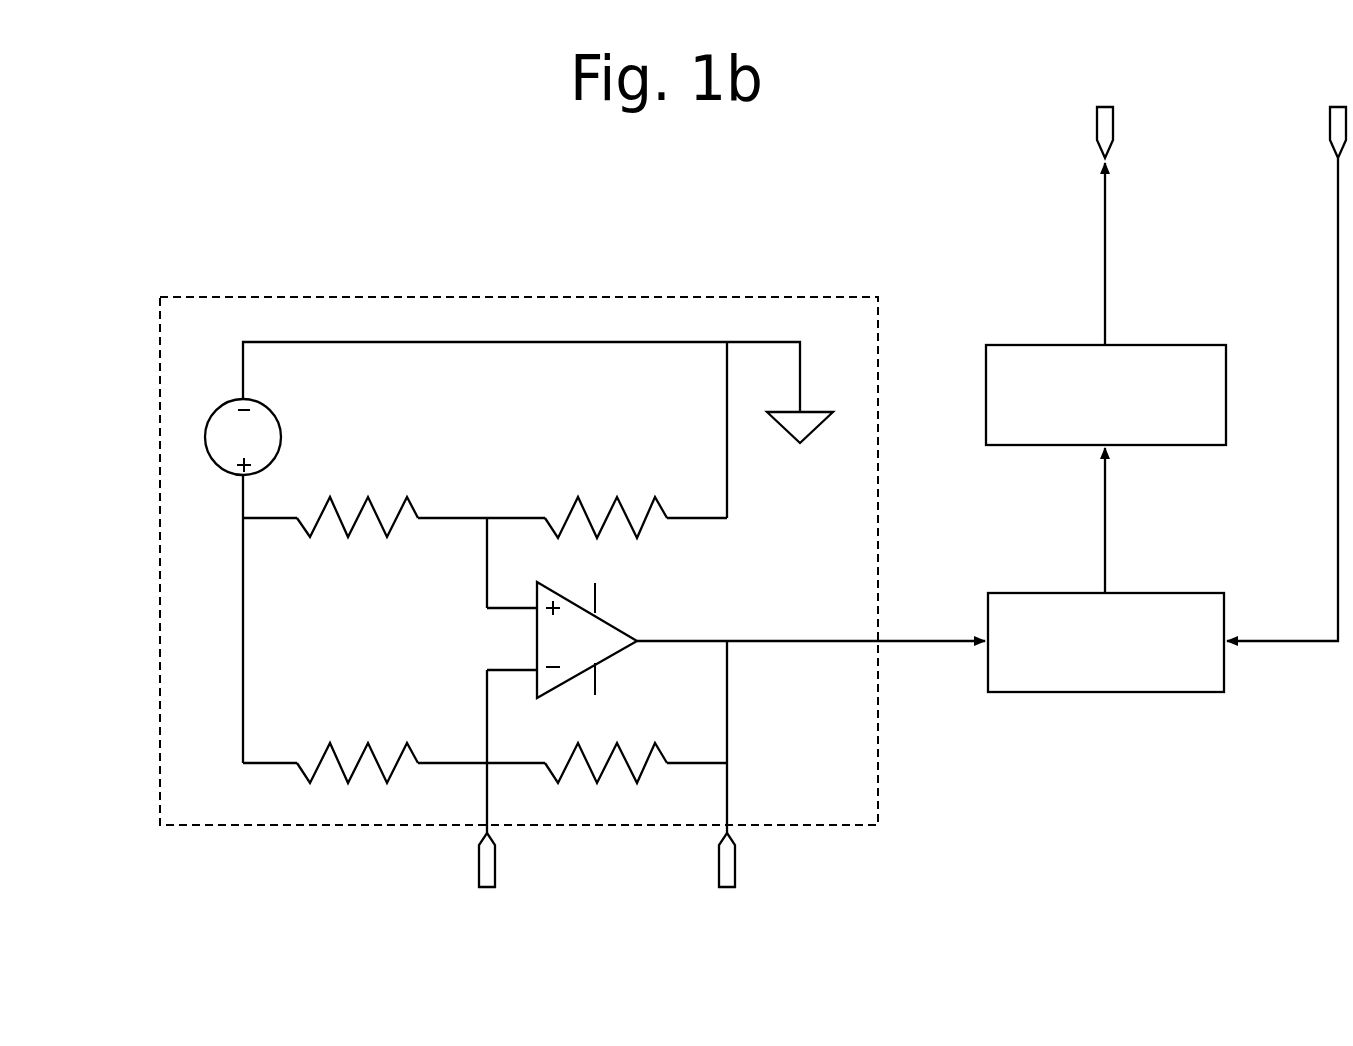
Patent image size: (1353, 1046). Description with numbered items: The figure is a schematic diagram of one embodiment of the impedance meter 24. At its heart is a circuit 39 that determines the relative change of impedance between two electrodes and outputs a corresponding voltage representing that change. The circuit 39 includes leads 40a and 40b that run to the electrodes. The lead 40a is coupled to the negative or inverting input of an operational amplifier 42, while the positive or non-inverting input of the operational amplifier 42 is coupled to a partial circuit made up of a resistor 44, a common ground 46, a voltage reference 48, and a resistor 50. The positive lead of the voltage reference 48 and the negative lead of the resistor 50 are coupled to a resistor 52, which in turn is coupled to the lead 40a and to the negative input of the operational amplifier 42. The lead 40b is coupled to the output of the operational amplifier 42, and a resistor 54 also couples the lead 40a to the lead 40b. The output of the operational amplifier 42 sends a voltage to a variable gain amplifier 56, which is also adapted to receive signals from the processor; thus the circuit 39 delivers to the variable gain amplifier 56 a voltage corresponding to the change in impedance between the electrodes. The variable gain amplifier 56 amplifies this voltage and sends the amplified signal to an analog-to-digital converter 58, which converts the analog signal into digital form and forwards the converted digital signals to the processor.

The impedance meter 24 is at (930, 848).
The circuit 39 is at (841, 321).
The lead 40a is at (476, 853).
The lead 40b is at (731, 858).
The operational amplifier 42 is at (605, 632).
The resistor 44 is at (632, 510).
The common ground 46 is at (808, 413).
The voltage reference 48 is at (230, 417).
The resistor 50 is at (385, 507).
The resistor 52 is at (333, 777).
The resistor 54 is at (640, 785).
The variable gain amplifier 56 is at (1137, 692).
The analog-to-digital converter 58 is at (1143, 447).